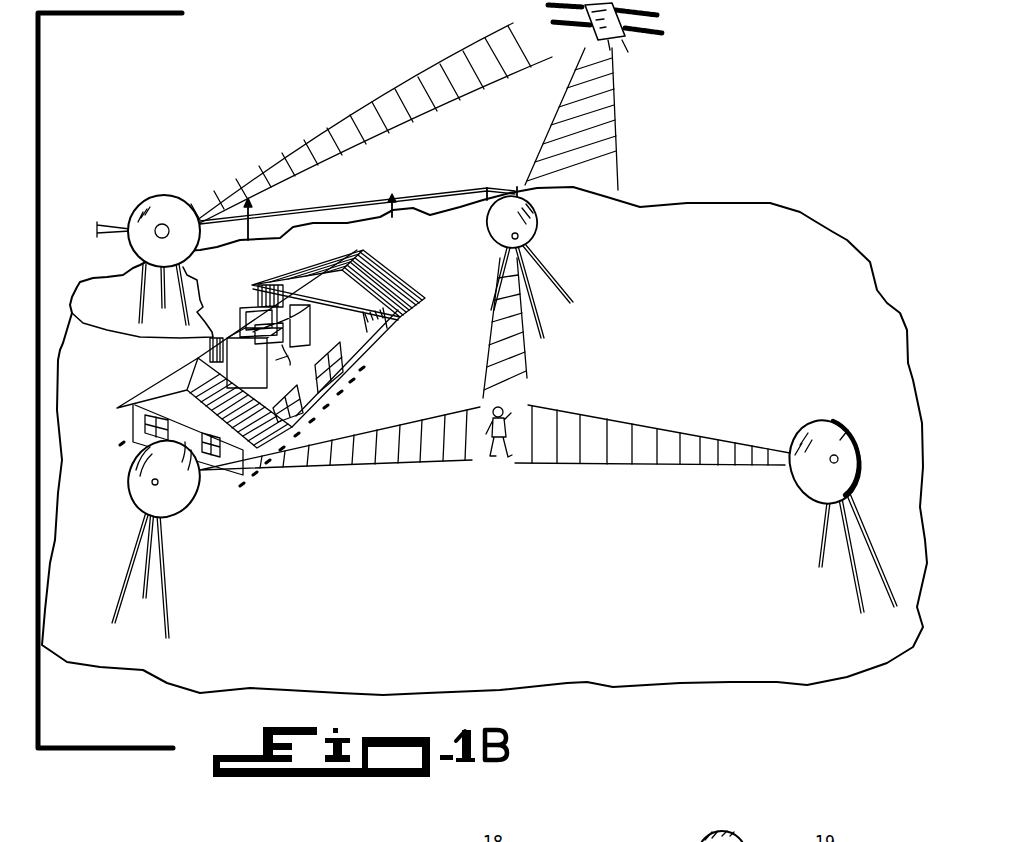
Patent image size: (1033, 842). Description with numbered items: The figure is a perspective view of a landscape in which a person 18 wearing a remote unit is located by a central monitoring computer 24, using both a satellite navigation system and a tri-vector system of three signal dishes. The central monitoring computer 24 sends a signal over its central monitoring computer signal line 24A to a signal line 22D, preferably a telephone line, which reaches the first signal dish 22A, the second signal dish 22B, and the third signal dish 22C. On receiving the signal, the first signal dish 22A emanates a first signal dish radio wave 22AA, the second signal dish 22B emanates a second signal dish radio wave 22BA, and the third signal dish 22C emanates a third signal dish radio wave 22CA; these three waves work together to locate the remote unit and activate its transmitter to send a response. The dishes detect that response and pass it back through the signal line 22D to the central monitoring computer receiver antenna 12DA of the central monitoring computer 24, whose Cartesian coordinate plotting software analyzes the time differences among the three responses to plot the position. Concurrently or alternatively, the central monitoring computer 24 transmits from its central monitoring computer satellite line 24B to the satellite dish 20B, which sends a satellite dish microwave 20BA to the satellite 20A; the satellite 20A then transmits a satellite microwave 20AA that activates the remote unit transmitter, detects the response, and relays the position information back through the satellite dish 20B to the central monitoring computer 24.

The satellite 20A is at (667, 21).
The satellite microwave 20AA is at (592, 118).
The satellite dish 20B is at (200, 170).
The satellite dish microwave 20BA is at (353, 123).
The first signal dish 22A is at (519, 196).
The first signal dish radio wave 22AA is at (515, 313).
The second signal dish 22B is at (143, 502).
The second signal dish radio wave 22BA is at (383, 457).
The third signal dish 22C is at (856, 424).
The third signal dish radio wave 22CA is at (705, 463).
The signal line 22D is at (437, 198).
The central monitoring computer 24 is at (73, 311).
The central monitoring computer signal line 24A is at (297, 215).
The central monitoring computer satellite line 24B is at (140, 268).
The central monitoring computer receiver antenna 12DA is at (252, 310).
The person 18 is at (508, 417).